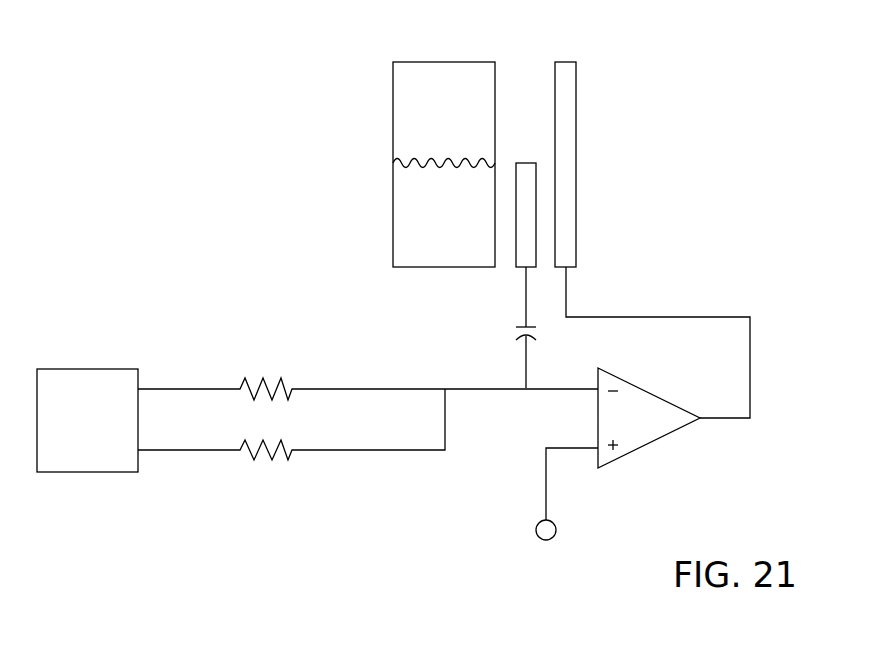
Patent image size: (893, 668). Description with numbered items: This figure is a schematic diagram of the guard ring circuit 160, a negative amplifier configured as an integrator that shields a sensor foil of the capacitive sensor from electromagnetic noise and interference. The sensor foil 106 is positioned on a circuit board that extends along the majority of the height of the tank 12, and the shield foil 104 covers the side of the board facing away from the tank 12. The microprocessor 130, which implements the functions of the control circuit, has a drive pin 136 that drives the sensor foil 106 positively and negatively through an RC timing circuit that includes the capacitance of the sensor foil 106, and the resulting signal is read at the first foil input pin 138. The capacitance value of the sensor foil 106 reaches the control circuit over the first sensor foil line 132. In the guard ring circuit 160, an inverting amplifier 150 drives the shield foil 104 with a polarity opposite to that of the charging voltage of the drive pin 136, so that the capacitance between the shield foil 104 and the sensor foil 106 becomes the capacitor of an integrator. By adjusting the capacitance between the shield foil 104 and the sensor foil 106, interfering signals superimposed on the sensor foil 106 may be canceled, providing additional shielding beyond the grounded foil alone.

The tank 12 is at (393, 112).
The shield foil 104 is at (577, 165).
The first sensor foil 106 is at (527, 163).
The microprocessor 130 is at (88, 367).
The first sensor foil line 132 is at (523, 285).
The drive pin 136 is at (172, 387).
The first foil input pin 138 is at (172, 451).
The inverting amplifier 150 is at (648, 445).
The guard ring circuit 160 is at (487, 468).